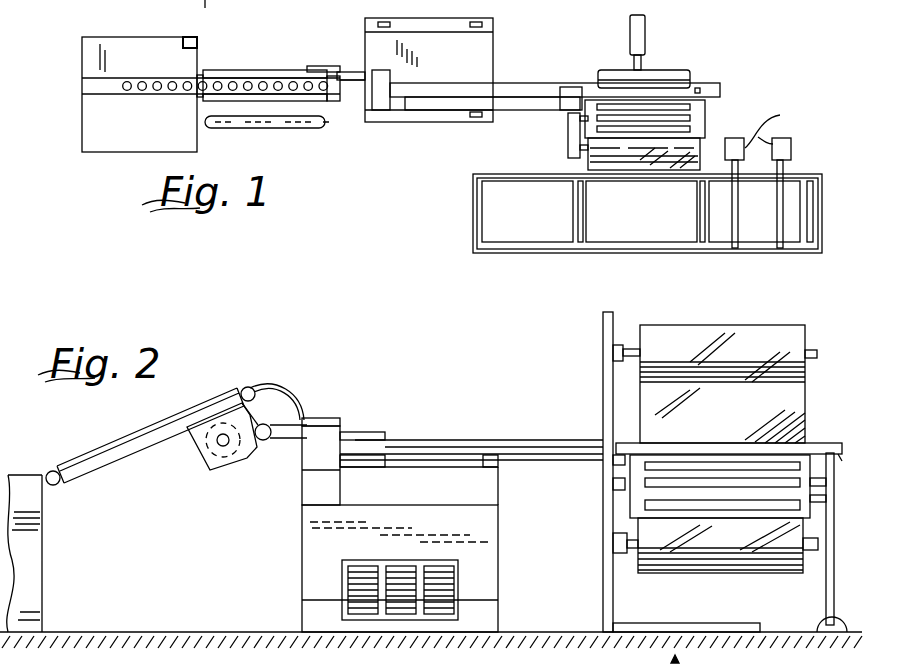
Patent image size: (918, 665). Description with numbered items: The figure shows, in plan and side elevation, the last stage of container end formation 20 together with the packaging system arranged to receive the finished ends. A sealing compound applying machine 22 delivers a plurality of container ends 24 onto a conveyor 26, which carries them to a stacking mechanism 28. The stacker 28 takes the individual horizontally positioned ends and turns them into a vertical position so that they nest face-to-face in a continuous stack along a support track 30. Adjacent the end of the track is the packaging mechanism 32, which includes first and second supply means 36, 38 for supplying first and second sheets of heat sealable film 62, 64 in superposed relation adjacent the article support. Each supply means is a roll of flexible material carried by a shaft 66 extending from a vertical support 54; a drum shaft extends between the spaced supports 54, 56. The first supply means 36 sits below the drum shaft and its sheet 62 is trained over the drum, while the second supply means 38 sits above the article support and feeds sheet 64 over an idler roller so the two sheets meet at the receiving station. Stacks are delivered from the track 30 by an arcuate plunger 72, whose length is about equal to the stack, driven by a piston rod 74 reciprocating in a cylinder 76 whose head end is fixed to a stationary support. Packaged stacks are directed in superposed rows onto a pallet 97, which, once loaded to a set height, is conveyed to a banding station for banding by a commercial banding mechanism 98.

In FIG. 2, the last stage of container end formation 20 is at (343, 396).
In FIG. 1, the sealing compound applying machine 22 is at (174, 37).
In FIG. 2, the sealing compound applying machine 22 is at (30, 482).
In FIG. 1, the container ends 24 is at (237, 88).
In FIG. 2, the container ends 24 is at (132, 418).
In FIG. 1, the conveyor 26 is at (280, 72).
In FIG. 1, the stacking mechanism 28 is at (374, 42).
In FIG. 2, the stacking mechanism 28 is at (390, 435).
In FIG. 1, the support track 30 is at (547, 65).
In FIG. 2, the support track 30 is at (534, 448).
In FIG. 1, the packaging mechanism 32 is at (716, 124).
In FIG. 2, the packaging mechanism 32 is at (806, 430).
In FIG. 2, the first supply means 36 is at (679, 575).
In FIG. 1, the second supply means 38 is at (586, 161).
In FIG. 2, the second supply means 38 is at (732, 292).
In FIG. 2, the vertical support 54 is at (603, 518).
In FIG. 2, the support 56 is at (834, 546).
In FIG. 2, the first flexible sealable sheet 62 is at (760, 550).
In FIG. 2, the second flexible sealable sheet 64 is at (775, 336).
In FIG. 2, the shaft 66 is at (627, 345).
In FIG. 1, the arcuate plunger 72 is at (668, 72).
In FIG. 1, the piston rod 74 is at (623, 62).
In FIG. 1, the cylinder 76 is at (648, 40).
In FIG. 1, the pallet 97 is at (485, 222).
In FIG. 1, the banding mechanism 98 is at (766, 174).